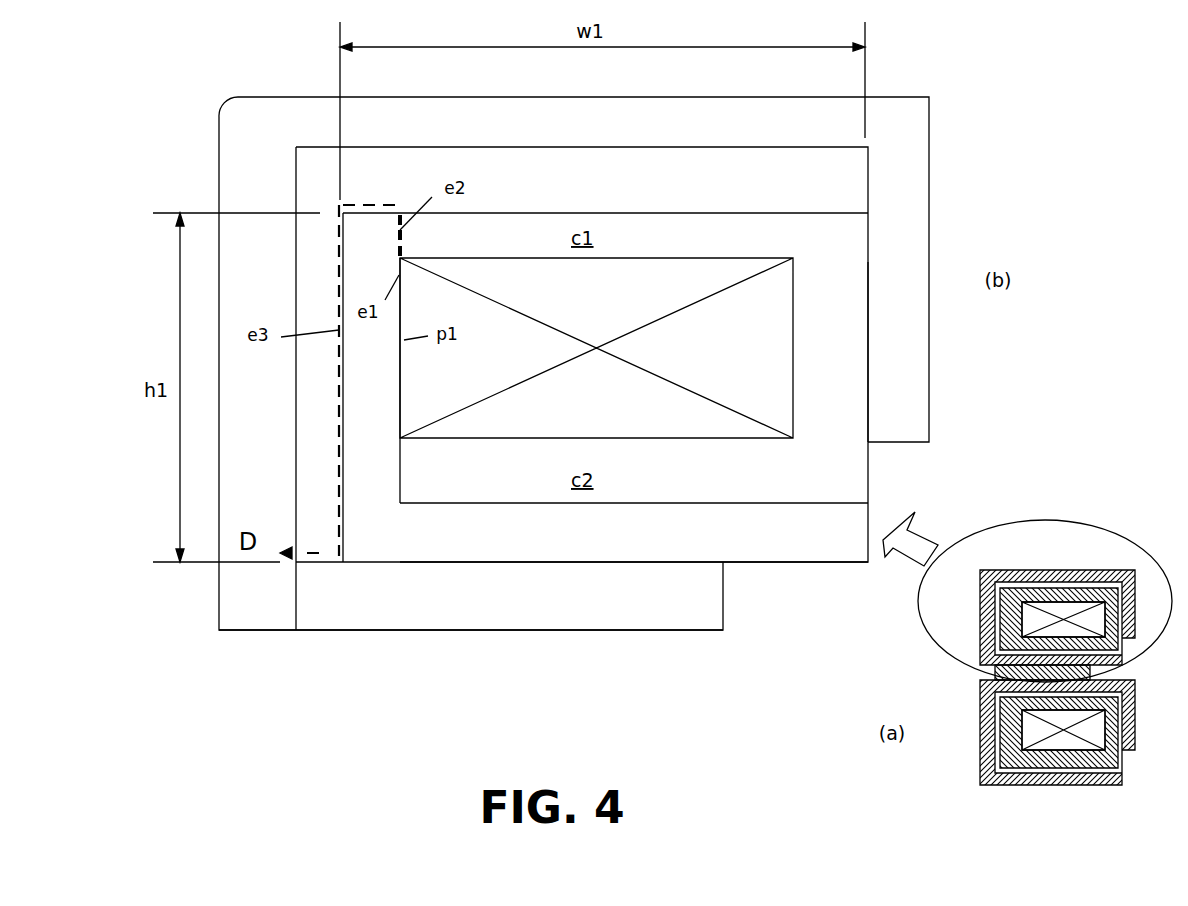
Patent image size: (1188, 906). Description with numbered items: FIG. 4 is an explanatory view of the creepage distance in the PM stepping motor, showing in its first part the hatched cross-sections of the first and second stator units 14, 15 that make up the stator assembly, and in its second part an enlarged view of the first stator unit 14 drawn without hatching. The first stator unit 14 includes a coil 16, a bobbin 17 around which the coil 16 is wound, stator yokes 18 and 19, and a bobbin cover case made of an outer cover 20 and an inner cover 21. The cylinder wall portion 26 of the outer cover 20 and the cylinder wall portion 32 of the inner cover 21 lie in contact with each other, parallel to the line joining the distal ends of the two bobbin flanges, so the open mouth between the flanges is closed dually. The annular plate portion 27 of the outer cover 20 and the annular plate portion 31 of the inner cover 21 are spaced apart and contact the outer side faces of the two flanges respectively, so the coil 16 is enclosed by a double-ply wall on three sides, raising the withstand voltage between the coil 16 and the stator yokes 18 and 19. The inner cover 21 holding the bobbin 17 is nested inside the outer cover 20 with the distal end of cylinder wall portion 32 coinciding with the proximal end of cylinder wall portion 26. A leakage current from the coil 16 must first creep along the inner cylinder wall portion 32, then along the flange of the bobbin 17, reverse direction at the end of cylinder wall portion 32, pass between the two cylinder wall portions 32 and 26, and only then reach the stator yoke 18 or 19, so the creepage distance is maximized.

The first stator unit 14 is at (968, 611).
The second stator unit 15 is at (968, 702).
The coil 16 is at (753, 375).
The bobbin 17 is at (835, 340).
The stator yoke 18 is at (762, 113).
The stator yoke 19 is at (522, 622).
The outer cover 20 is at (613, 160).
The inner cover 21 is at (700, 547).
The cylinder wall portion 26 is at (349, 380).
The annular plate portion 27 is at (605, 197).
The annular plate portion 31 is at (634, 525).
The cylinder wall portion 32 is at (371, 387).